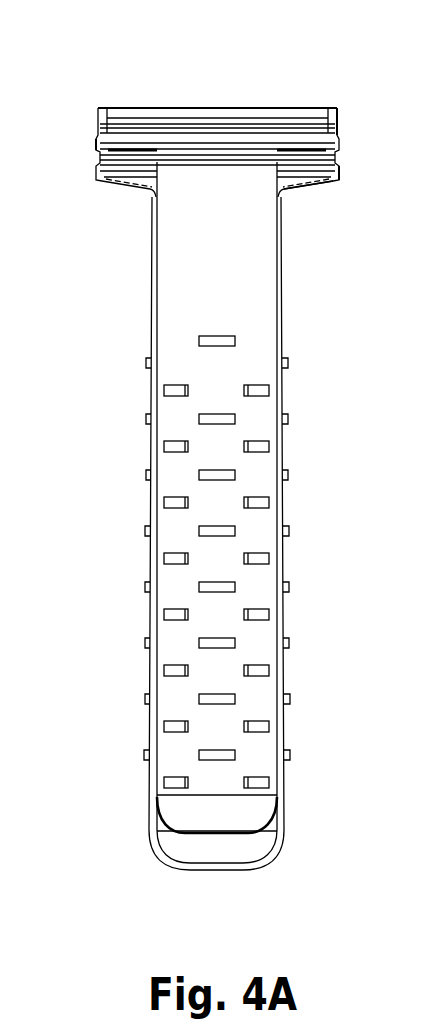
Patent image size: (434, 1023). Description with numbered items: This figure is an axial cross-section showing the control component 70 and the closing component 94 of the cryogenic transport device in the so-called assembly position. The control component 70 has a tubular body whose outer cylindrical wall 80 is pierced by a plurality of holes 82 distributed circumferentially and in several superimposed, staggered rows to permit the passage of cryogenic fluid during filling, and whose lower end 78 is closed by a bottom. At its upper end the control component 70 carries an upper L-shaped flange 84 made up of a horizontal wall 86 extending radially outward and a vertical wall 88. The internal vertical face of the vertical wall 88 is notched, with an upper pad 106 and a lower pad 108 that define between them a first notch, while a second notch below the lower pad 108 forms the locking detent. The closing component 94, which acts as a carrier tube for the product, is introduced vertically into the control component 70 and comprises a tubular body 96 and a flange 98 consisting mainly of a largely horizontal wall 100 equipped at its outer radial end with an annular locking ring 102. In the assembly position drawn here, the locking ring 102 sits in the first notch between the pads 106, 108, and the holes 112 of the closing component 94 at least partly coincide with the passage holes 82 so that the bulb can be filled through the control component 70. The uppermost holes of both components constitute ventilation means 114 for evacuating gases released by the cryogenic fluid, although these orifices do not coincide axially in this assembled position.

The control component 70 is at (113, 558).
The lower end 78 is at (207, 868).
The cylindrical wall 80 is at (146, 836).
The holes 82 is at (286, 643).
The upper L flange 84 is at (111, 185).
The horizontal wall 86 is at (313, 184).
The vertical wall 88 is at (338, 112).
The closing component 94 is at (238, 817).
The tubular body 96 is at (286, 248).
The flange 98 is at (148, 150).
The horizontal wall 100 is at (338, 167).
The annular locking ring 102 is at (100, 148).
The upper pad 106 is at (196, 133).
The lower pad 108 is at (310, 153).
The holes 112 is at (229, 531).
The ventilation means 114 is at (222, 340).